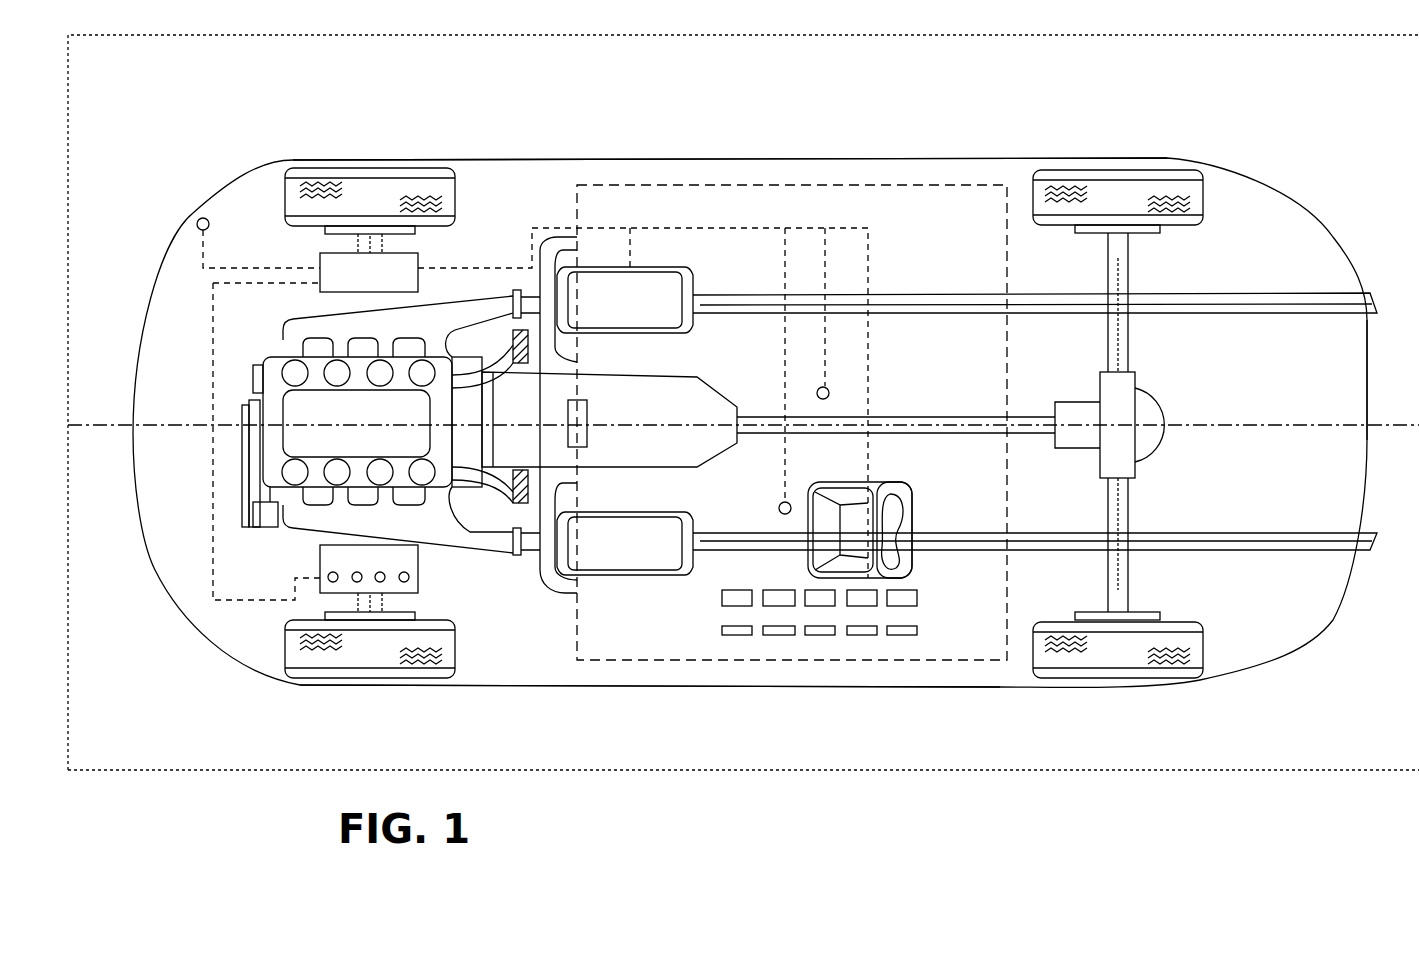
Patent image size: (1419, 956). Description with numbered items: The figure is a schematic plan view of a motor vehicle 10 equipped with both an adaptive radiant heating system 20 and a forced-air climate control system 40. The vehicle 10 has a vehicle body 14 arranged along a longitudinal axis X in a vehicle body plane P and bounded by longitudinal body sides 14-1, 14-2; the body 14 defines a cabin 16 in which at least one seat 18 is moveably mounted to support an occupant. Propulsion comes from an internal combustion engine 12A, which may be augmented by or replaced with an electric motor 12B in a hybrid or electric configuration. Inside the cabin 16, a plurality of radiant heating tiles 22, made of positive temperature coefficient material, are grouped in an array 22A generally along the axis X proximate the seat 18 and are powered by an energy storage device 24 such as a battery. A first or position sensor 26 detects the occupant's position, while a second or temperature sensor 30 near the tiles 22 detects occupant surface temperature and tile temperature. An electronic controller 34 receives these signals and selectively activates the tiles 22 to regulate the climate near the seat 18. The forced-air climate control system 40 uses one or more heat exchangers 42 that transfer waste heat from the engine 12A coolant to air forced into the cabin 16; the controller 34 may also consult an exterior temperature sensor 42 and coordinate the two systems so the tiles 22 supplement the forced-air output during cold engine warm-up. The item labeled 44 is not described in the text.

The motor vehicle 10 is at (912, 143).
The internal combustion engine 12A is at (255, 378).
The electric motor 12B is at (577, 447).
The vehicle body 14 is at (1293, 392).
The longitudinal body side 14-1 is at (952, 685).
The longitudinal body side 14-2 is at (968, 160).
The cabin 16 is at (835, 660).
The seat 18 is at (913, 513).
The adaptive radiant heating system 20 is at (955, 373).
The radiant heating tiles 22 is at (805, 635).
The array 22A is at (826, 612).
The energy storage device 24 is at (320, 567).
The first or position sensor 26 is at (780, 505).
The second or temperature sensor 30 is at (829, 393).
The electronic controller 34 is at (320, 257).
The forced-air climate control system 40 is at (563, 597).
The heat exchanger 42 is at (513, 335).
The sensor 44 is at (197, 222).
The longitudinal axis X is at (1385, 425).
The vehicle body plane P is at (862, 770).